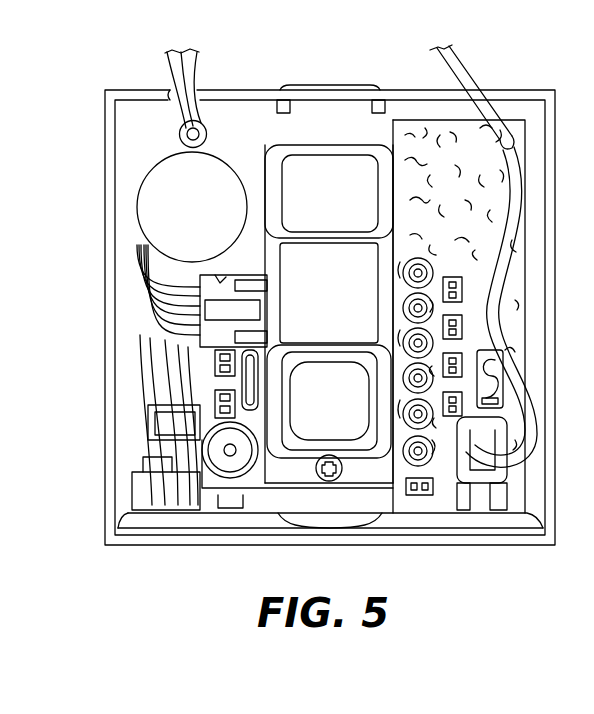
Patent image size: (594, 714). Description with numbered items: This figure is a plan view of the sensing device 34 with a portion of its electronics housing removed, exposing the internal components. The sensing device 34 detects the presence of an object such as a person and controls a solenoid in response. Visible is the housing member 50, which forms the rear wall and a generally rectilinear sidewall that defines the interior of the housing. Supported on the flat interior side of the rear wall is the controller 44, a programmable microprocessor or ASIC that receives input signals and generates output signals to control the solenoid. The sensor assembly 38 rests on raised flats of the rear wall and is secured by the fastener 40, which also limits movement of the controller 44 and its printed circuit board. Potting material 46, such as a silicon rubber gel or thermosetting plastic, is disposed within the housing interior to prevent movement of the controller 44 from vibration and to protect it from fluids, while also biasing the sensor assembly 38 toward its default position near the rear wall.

The sensing device 34 is at (122, 78).
The sensor assembly 38 is at (318, 188).
The fastener 40 is at (318, 478).
The controller 44 is at (447, 507).
The potting material 46 is at (400, 118).
The member 50 is at (107, 514).